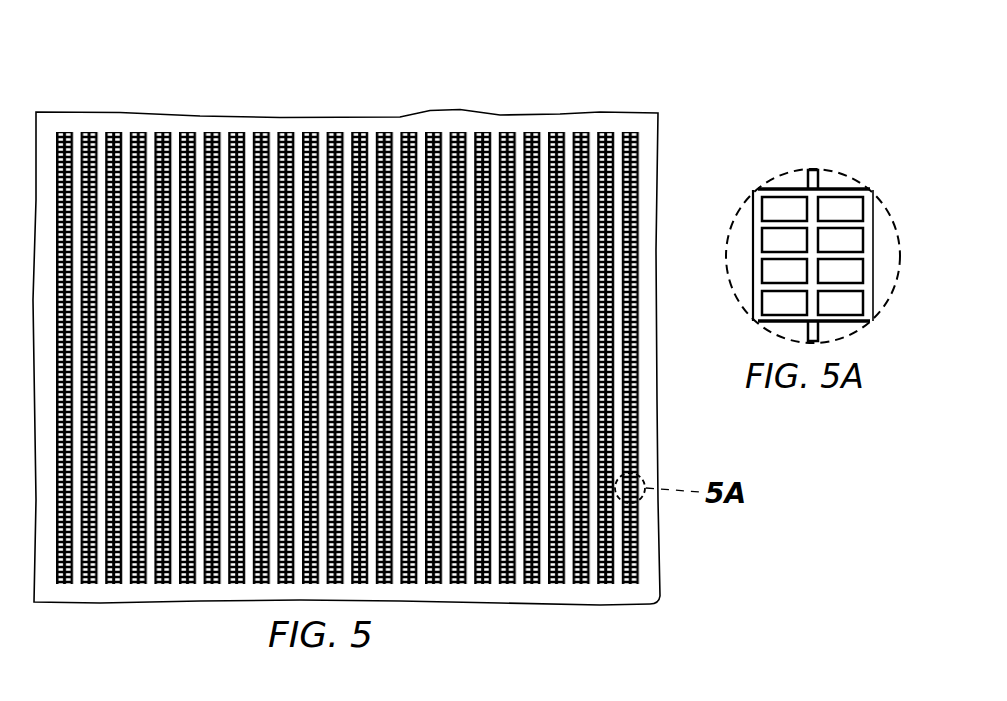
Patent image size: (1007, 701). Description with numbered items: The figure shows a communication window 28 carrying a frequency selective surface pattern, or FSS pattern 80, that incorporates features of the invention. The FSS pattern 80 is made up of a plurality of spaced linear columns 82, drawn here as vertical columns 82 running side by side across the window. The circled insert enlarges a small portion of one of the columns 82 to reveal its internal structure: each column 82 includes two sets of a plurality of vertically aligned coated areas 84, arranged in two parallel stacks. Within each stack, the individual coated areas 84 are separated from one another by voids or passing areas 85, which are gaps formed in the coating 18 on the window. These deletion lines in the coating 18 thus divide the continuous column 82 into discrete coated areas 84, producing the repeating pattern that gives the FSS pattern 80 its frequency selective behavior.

In FIG. 5, the coating 18 is at (101, 132).
In FIG. 5, the communication window 28 is at (77, 113).
In FIG. 5, the FSS pattern 80 is at (519, 116).
In FIG. 5, the column 82 is at (385, 132).
In FIG. 5A, the column 82 is at (882, 236).
In FIG. 5A, the coated area 84 is at (768, 268).
In FIG. 5A, the void or passing area 85 is at (752, 290).